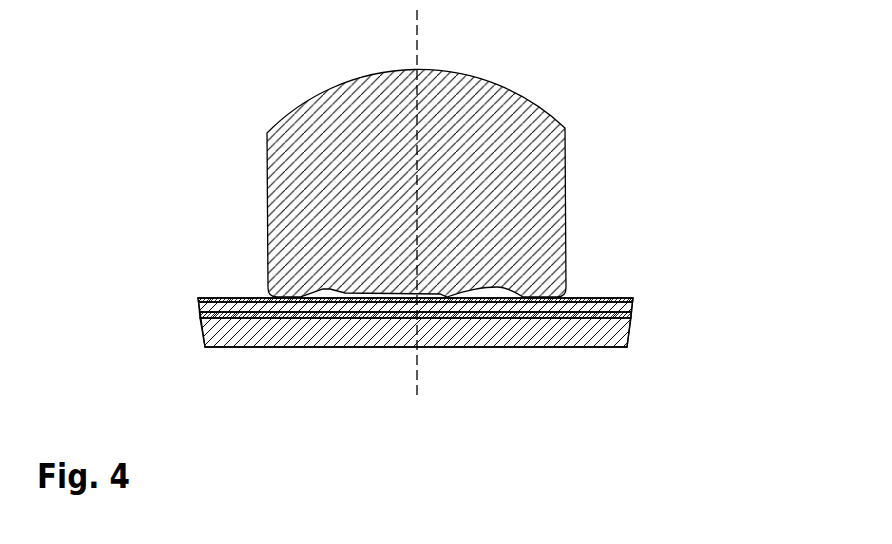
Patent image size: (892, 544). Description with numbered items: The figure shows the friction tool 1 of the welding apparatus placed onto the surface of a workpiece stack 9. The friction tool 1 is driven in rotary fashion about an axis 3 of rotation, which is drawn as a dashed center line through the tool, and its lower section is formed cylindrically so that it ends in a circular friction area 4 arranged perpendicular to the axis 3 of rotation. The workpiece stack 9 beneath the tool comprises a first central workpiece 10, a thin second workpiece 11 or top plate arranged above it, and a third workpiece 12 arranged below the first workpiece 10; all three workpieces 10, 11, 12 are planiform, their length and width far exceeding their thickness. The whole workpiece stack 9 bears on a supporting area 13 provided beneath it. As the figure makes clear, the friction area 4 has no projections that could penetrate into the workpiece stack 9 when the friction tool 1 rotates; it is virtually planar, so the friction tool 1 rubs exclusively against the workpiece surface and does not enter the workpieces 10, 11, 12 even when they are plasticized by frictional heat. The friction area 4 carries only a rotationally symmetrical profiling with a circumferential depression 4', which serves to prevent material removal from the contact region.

The friction tool 1 is at (488, 145).
The axis of rotation 3 is at (419, 49).
The friction area 4 is at (457, 370).
The circumferential depression 4' is at (294, 367).
The workpiece stack 9 is at (477, 314).
The first central workpiece 10 is at (570, 305).
The second workpiece 11 is at (592, 296).
The third workpiece 12 is at (610, 303).
The supporting area 13 is at (383, 325).